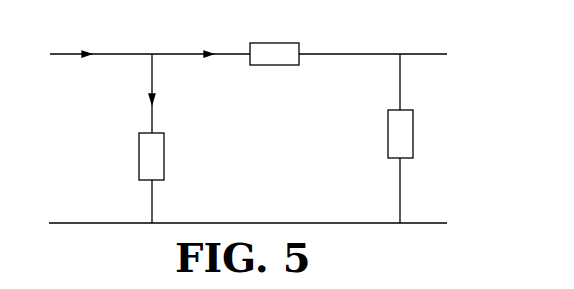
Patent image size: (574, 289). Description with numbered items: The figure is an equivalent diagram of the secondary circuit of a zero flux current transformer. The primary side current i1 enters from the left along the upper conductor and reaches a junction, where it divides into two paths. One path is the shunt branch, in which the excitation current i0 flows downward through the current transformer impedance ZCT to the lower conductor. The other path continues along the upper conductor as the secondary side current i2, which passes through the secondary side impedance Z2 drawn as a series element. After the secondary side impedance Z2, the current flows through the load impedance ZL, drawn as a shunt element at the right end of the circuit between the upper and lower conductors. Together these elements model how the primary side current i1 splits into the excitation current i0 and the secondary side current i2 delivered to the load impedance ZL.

The primary side current i1 is at (90, 74).
The excitation current i0 is at (166, 90).
The secondary side current i2 is at (222, 72).
The secondary side impedance Z2 is at (289, 67).
The current transformer impedance ZCT is at (169, 138).
The load impedance ZL is at (388, 138).